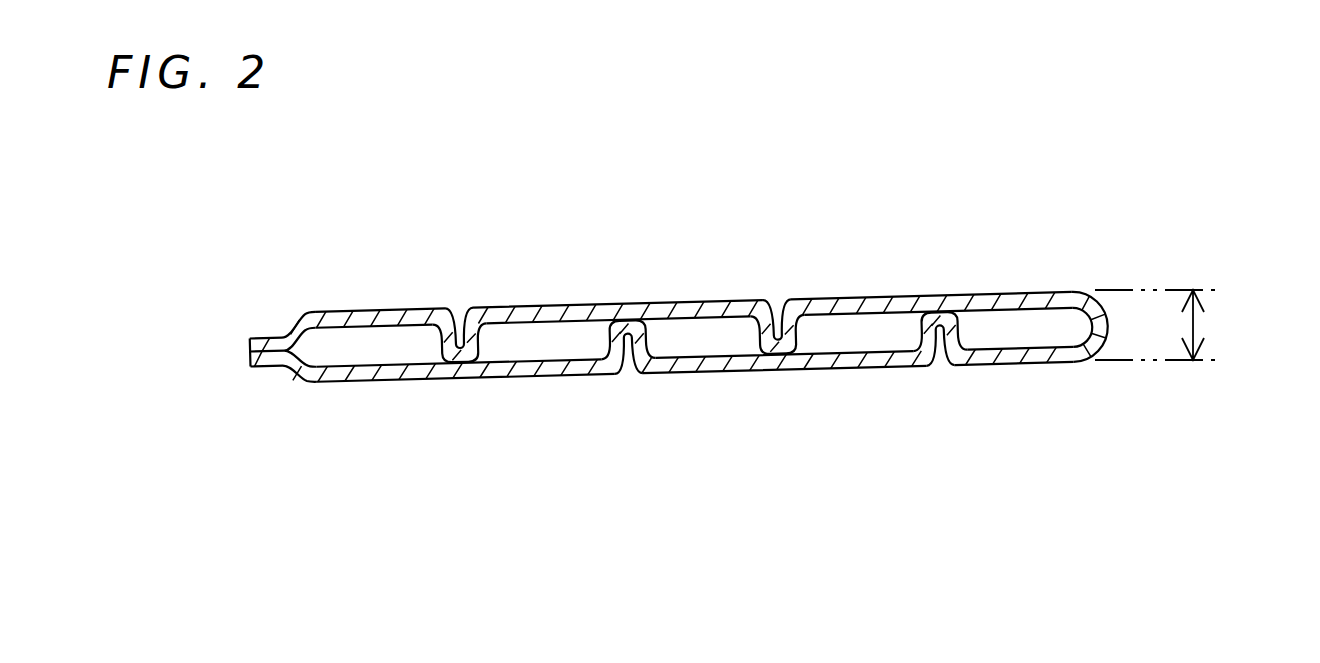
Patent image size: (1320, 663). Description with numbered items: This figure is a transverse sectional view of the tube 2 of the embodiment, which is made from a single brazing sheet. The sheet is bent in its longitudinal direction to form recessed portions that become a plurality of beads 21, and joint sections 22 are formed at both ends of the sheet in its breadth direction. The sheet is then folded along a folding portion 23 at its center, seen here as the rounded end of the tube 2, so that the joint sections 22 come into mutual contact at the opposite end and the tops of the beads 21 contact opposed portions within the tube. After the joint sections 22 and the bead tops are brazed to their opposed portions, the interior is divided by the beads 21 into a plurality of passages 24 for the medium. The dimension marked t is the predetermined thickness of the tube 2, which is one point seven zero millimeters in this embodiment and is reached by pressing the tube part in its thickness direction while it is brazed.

The tube 2 is at (895, 270).
The bead 21 is at (628, 328).
The joint section 22 is at (252, 337).
The folding portion 23 is at (1100, 320).
The passage 24 is at (513, 337).
The predetermined thickness t is at (1197, 326).